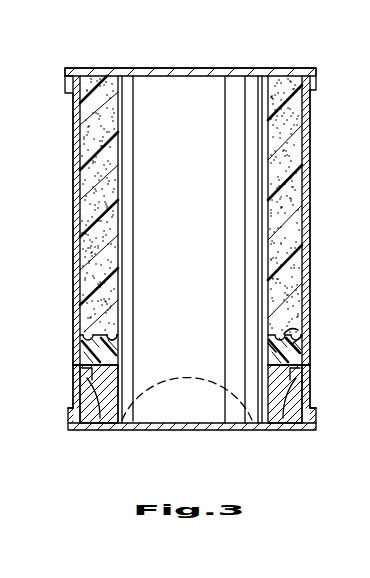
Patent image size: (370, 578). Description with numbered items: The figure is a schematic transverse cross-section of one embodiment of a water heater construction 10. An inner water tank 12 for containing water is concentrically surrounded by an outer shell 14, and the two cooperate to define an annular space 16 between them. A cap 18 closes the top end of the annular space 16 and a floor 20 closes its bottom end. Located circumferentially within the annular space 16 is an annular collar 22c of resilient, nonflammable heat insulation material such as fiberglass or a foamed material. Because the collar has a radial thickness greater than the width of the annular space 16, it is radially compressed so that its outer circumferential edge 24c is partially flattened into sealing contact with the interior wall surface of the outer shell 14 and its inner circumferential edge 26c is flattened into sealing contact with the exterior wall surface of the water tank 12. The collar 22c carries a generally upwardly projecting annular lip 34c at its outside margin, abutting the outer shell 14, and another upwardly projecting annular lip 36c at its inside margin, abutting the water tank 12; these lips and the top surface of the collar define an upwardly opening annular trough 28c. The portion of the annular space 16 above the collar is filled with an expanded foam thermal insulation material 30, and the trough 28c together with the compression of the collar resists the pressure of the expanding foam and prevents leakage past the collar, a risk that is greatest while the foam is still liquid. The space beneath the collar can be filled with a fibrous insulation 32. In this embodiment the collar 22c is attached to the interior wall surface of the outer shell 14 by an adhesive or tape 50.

The water heater construction 10 is at (231, 62).
The inner water tank 12 is at (247, 146).
The outer shell 14 is at (309, 181).
The annular space 16 is at (90, 199).
The cap 18 is at (181, 66).
The floor 20 is at (111, 424).
The annular collar 22c is at (90, 357).
The outer circumferential edge 24c is at (309, 354).
The inner circumferential edge 26c is at (268, 350).
The annular trough 28c is at (288, 336).
The expanded foam thermal insulation material 30 is at (90, 134).
The fibrous insulation 32 is at (300, 413).
The annular lip 34c is at (303, 338).
The annular lip 36c is at (113, 340).
The adhesive or tape 50 is at (89, 426).